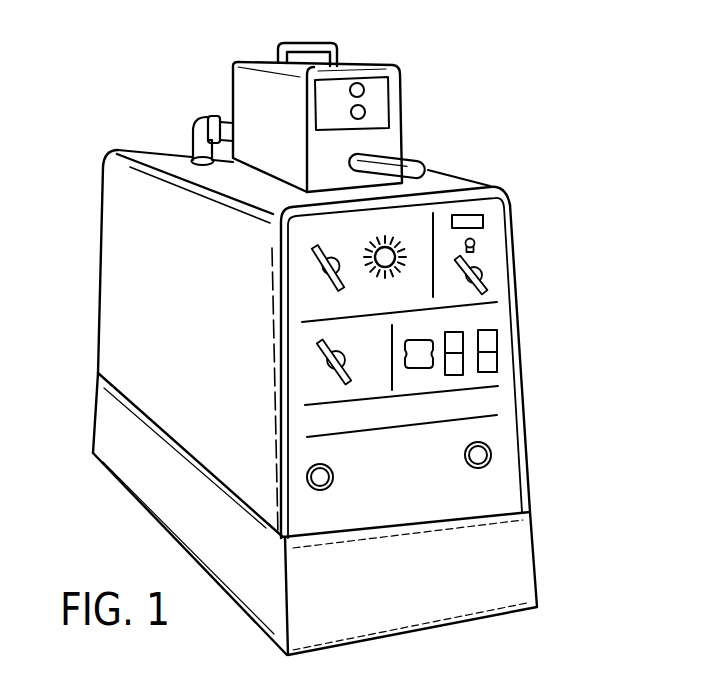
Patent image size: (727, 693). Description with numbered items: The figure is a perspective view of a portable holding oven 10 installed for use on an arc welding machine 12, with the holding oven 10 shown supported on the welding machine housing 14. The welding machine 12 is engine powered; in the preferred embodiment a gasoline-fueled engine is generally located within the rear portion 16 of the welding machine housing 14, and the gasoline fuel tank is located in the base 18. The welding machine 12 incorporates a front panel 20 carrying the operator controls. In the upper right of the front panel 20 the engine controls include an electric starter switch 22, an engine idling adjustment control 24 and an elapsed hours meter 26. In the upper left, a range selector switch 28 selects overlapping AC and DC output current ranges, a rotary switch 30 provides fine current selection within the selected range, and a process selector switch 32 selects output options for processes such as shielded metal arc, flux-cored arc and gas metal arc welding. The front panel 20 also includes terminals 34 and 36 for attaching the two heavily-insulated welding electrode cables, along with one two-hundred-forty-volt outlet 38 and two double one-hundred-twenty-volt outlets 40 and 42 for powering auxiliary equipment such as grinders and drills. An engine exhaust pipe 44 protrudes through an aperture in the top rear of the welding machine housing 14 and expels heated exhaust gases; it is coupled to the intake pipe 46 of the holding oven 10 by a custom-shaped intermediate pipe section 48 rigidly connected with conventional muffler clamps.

The portable holding oven 10 is at (417, 70).
The arc welding machine 12 is at (558, 363).
The welding machine housing 14 is at (468, 178).
The rear portion 16 is at (98, 262).
The base 18 is at (130, 493).
The front panel 20 is at (510, 487).
The electric starter switch 22 is at (475, 247).
The engine idling adjustment control 24 is at (487, 285).
The elapsed hours meter 26 is at (483, 218).
The range selector switch 28 is at (325, 272).
The rotary switch 30 is at (385, 265).
The process selector switch 32 is at (327, 360).
The terminal 34 is at (478, 468).
The terminal 36 is at (332, 482).
The 240-volt outlet 38 is at (418, 372).
The double 120-volt outlet 40 is at (455, 377).
The double 120-volt outlet 42 is at (492, 374).
The engine exhaust pipe 44 is at (189, 142).
The intake pipe 46 is at (218, 116).
The intermediate pipe section 48 is at (199, 117).